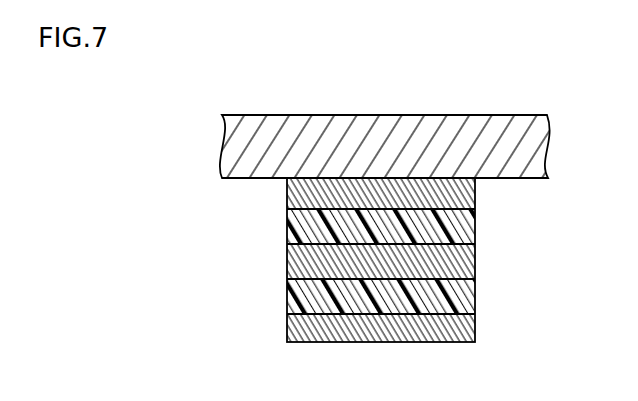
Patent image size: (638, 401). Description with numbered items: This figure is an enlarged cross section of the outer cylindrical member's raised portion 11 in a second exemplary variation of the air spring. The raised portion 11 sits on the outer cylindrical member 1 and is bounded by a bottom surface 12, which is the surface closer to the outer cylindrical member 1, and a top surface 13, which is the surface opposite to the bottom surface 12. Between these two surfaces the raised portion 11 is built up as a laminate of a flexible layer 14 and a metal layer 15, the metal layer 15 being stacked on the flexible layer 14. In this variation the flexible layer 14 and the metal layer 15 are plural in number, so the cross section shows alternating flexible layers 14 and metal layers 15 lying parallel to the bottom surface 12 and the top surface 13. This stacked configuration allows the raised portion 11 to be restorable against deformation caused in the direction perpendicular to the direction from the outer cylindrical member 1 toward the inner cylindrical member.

The outer cylindrical member 1 is at (368, 138).
The outer cylindrical member's raised portion 11 is at (506, 273).
The bottom surface 12 is at (475, 193).
The top surface 13 is at (448, 343).
The flexible layer 14 is at (287, 230).
The metal layer 15 is at (287, 197).